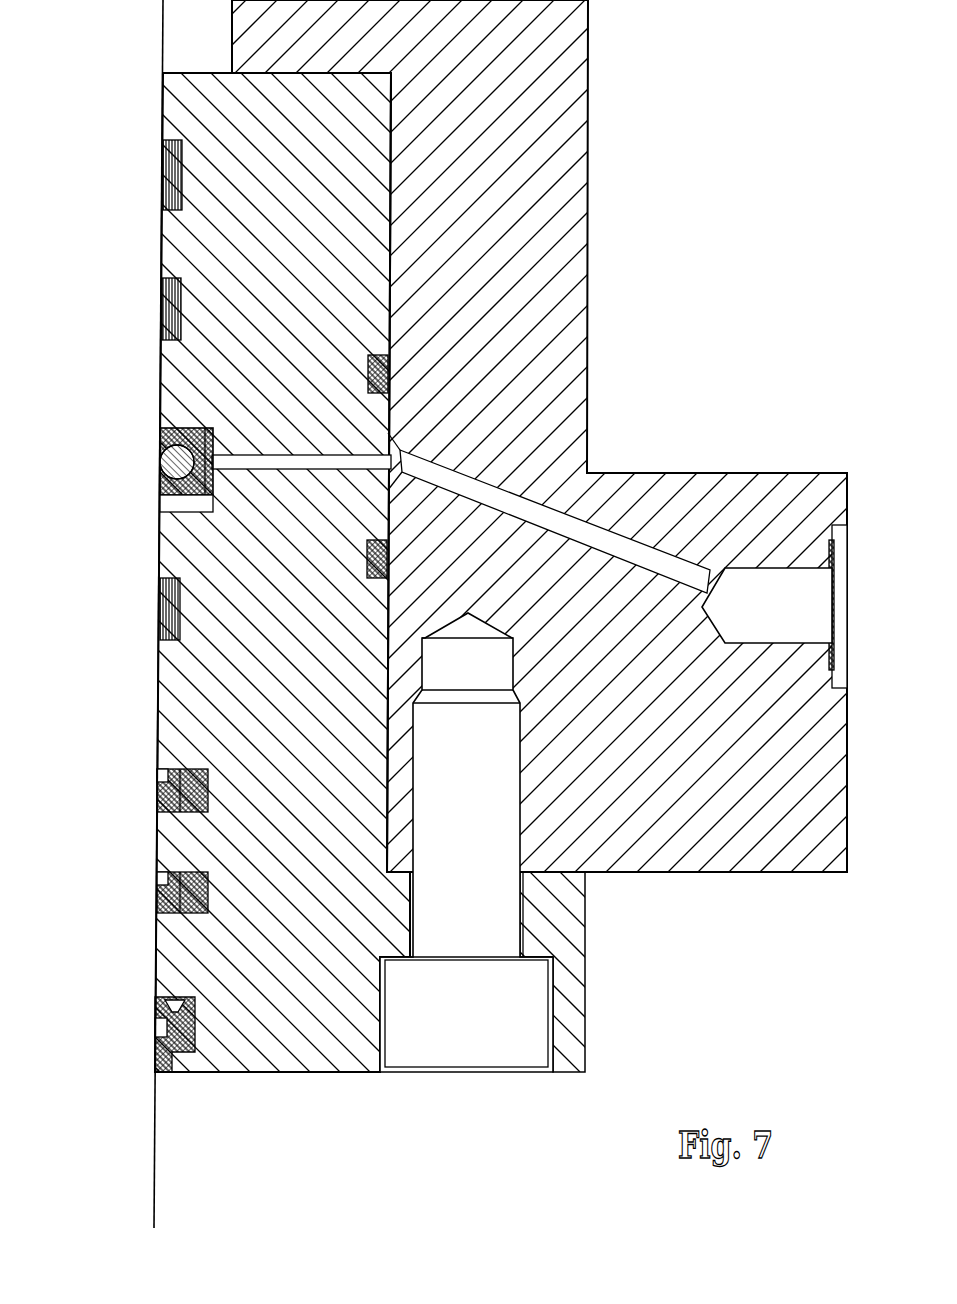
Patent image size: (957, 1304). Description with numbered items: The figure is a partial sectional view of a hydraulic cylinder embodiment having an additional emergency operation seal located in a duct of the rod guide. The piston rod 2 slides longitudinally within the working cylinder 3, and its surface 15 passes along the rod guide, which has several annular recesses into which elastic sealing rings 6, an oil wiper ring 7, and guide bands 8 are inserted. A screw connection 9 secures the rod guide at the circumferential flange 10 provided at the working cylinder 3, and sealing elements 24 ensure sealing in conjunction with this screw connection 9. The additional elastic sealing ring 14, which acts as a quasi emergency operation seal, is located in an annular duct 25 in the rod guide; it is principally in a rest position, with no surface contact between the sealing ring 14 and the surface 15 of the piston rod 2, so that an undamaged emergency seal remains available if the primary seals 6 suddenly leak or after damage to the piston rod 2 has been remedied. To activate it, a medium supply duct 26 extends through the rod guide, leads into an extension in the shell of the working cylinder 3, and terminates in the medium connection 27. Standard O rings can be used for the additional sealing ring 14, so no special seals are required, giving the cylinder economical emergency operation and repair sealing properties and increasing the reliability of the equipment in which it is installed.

The piston rod 2 is at (92, 92).
The working cylinder 3 is at (542, 147).
The elastic sealing rings 6 is at (102, 838).
The oil wiper ring 7 is at (182, 1026).
The guide bands 8 is at (112, 222).
The screw connection 9 is at (473, 886).
The circumferential flange 10 is at (750, 815).
The additional elastic sealing ring 14 is at (165, 440).
The surface of the piston rod 15 is at (157, 1105).
The sealing elements 24 is at (388, 366).
The annular duct 25 is at (160, 505).
The medium supply duct 26 is at (498, 494).
The medium connection 27 is at (842, 588).